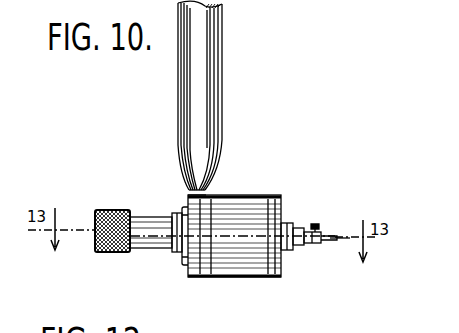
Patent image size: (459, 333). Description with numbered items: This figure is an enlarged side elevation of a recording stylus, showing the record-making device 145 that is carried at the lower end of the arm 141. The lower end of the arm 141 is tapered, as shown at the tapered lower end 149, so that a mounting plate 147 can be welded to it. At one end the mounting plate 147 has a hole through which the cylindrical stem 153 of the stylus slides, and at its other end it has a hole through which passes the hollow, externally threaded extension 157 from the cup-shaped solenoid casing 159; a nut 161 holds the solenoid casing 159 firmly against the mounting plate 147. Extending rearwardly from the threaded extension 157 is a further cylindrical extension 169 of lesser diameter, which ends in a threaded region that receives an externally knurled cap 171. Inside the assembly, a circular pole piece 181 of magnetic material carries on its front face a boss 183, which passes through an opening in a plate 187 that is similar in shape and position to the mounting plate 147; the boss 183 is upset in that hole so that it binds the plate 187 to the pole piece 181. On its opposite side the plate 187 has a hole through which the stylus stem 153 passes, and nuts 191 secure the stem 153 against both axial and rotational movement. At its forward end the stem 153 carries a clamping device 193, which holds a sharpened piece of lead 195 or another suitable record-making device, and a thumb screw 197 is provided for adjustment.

The arm 141 is at (207, 78).
The record-making device 145 is at (248, 158).
The mounting plate 147 is at (195, 205).
The tapered lower end 149 is at (210, 168).
The cylindrical stem 153 is at (302, 226).
The externally threaded extension 157 is at (174, 255).
The solenoid casing 159 is at (228, 280).
The nut 161 is at (178, 262).
The cylindrical extension 169 is at (160, 250).
The knurled cap 171 is at (110, 254).
The pole piece 181 is at (268, 280).
The boss 183 is at (290, 252).
The plate 187 is at (276, 280).
The nuts 191 is at (290, 228).
The clamping device 193 is at (318, 250).
The lead 195 is at (332, 247).
The thumb screw 197 is at (318, 224).